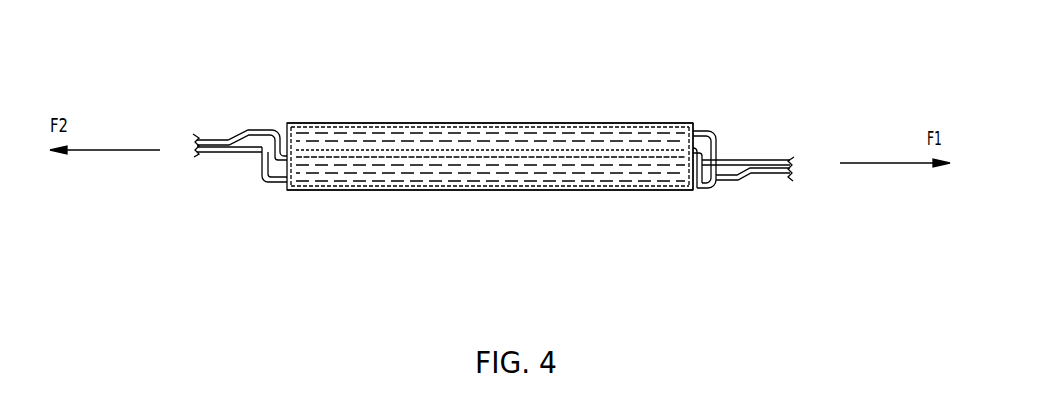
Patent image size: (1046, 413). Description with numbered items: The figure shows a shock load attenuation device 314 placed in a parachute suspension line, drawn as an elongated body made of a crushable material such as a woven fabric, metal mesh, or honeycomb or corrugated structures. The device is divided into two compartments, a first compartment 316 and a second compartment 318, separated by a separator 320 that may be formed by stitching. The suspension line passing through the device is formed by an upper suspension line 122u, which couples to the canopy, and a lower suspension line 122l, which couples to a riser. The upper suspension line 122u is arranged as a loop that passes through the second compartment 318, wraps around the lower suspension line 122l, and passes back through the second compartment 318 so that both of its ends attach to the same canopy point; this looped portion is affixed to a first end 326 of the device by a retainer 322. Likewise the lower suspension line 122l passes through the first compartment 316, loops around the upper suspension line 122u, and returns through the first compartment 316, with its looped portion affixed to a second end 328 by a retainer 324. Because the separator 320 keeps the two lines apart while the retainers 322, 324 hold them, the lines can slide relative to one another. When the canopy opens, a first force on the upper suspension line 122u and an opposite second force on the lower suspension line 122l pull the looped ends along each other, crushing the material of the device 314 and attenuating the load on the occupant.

The lower suspension line 122l is at (213, 138).
The upper suspension line 122u is at (760, 165).
The shock load attenuation device 314 is at (630, 85).
The first compartment 316 is at (492, 127).
The second compartment 318 is at (490, 190).
The separator 320 is at (573, 158).
The retainer 322 is at (292, 190).
The retainer 324 is at (689, 123).
The first end 326 is at (699, 120).
The second end 328 is at (280, 120).